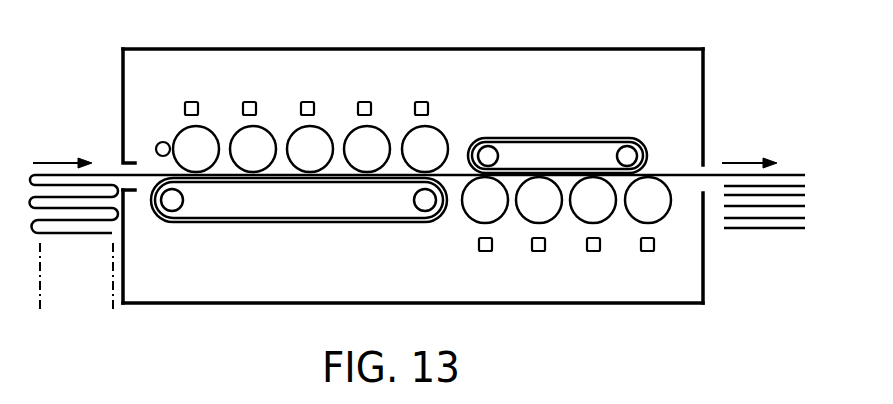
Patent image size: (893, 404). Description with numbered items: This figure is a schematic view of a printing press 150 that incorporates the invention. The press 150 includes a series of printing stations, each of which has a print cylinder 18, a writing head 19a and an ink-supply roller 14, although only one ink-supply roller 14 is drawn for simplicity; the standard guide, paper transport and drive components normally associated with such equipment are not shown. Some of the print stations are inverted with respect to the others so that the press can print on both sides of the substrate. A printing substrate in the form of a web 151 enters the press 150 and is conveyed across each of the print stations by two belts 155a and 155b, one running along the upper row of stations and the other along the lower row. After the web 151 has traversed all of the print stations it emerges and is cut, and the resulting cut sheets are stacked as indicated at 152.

The ink-supply roller 14 is at (163, 142).
The print cylinder 18 is at (445, 137).
The writing head 19a is at (413, 106).
The press 150 is at (743, 68).
The web 151 is at (57, 176).
The stacked cut sheets 152 is at (762, 230).
The belt 155a is at (293, 225).
The belt 155b is at (575, 117).